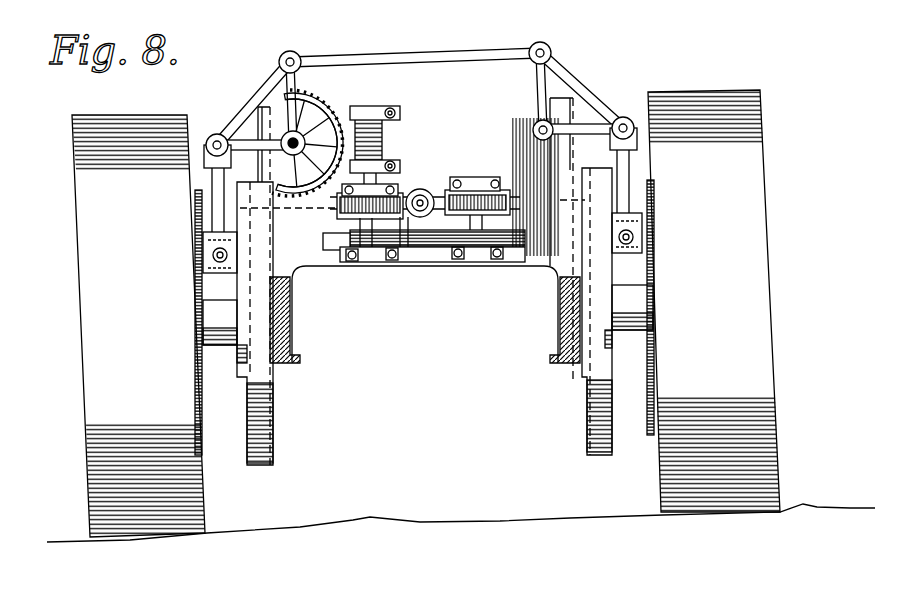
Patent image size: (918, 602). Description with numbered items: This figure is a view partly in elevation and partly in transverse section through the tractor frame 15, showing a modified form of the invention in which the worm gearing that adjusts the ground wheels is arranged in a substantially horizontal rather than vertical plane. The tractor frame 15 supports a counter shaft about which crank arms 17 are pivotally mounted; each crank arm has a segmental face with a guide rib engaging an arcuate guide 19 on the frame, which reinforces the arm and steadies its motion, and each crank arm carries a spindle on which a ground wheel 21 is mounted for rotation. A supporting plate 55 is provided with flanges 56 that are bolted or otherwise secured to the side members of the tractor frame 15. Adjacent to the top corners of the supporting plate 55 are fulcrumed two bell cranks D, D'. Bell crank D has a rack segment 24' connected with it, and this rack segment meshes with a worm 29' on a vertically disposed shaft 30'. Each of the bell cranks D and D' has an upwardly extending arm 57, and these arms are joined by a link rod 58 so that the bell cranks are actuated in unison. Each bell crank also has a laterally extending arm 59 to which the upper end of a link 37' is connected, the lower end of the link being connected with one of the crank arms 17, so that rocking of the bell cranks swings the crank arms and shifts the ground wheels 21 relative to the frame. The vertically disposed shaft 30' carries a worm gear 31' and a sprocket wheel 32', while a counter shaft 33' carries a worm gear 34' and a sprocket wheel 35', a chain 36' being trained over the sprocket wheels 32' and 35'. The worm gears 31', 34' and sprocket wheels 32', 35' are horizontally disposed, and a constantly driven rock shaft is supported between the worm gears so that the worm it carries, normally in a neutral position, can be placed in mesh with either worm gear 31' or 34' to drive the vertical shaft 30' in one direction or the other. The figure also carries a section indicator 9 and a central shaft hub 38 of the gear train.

The section line 9 is at (257, 222).
The tractor frame 15 is at (293, 353).
The crank arm 17 is at (233, 272).
The arcuate guide 19 is at (263, 465).
The ground wheel 21 is at (172, 525).
The rack segment 24' is at (335, 132).
The worm 29' is at (388, 138).
The vertically disposed shaft 30' is at (395, 163).
The worm gear 31' is at (490, 198).
The sprocket wheel 32' is at (358, 262).
The counter shaft 33' is at (432, 275).
The worm gear 34' is at (498, 193).
The sprocket wheel 35' is at (530, 213).
The chain 36' is at (424, 267).
The link 37' is at (285, 251).
The shaft hub 38 is at (423, 190).
The supporting plate 55 is at (452, 108).
The flange 56 is at (608, 140).
The upwardly extending arm 57 is at (297, 74).
The link rod 58 is at (438, 56).
The laterally extending arm 59 is at (247, 143).
The bell crank D is at (253, 104).
The bell crank D' is at (582, 90).